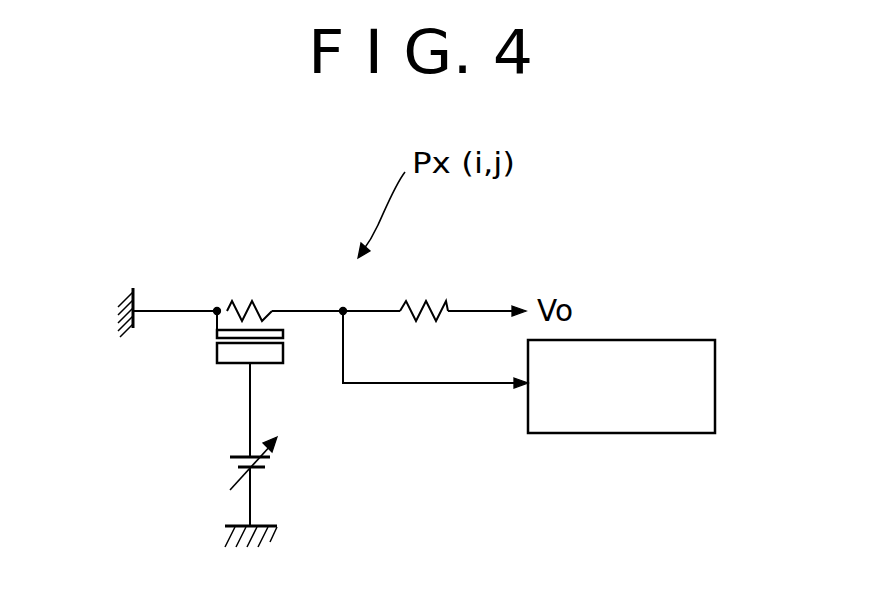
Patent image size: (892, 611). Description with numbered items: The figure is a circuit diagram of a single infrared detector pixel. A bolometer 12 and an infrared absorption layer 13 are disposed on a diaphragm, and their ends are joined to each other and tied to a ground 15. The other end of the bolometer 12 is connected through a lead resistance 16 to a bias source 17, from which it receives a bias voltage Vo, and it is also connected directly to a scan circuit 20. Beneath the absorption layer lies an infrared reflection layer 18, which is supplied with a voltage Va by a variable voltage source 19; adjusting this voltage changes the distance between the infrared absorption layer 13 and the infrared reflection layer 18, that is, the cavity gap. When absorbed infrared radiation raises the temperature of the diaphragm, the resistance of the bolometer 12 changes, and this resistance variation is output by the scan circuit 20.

The bolometer 12 is at (247, 302).
The infrared absorption layer 13 is at (217, 334).
The infrared reflection layer 18 is at (217, 360).
The variable voltage source 19 is at (285, 448).
The ground 15 is at (273, 525).
The lead resistance 16 is at (428, 299).
The bias source 17 is at (550, 292).
The scan circuit 20 is at (690, 339).